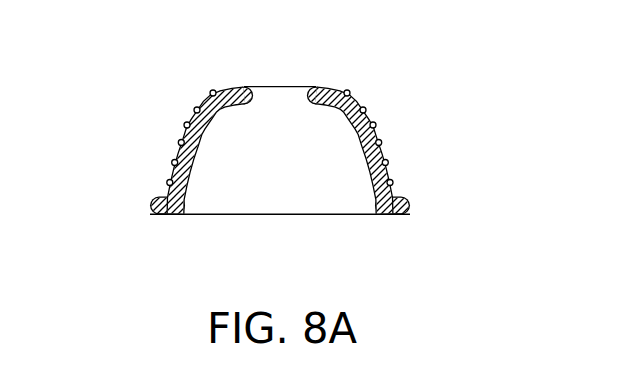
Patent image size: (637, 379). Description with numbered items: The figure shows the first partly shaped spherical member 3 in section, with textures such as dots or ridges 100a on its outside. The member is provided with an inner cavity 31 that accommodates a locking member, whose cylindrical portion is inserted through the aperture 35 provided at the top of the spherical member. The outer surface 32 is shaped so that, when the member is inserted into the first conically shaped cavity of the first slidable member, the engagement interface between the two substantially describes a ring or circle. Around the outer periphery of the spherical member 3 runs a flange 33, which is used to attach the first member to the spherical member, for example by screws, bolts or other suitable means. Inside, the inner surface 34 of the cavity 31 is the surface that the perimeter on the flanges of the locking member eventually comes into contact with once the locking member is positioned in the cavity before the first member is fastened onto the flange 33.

The first partly shaped spherical member 3 is at (401, 93).
The inner cavity 31 is at (287, 190).
The outer surface 32 is at (392, 160).
The flange 33 is at (405, 193).
The inner surface 34 is at (192, 195).
The aperture 35 is at (280, 77).
The protrusions 100a is at (187, 127).